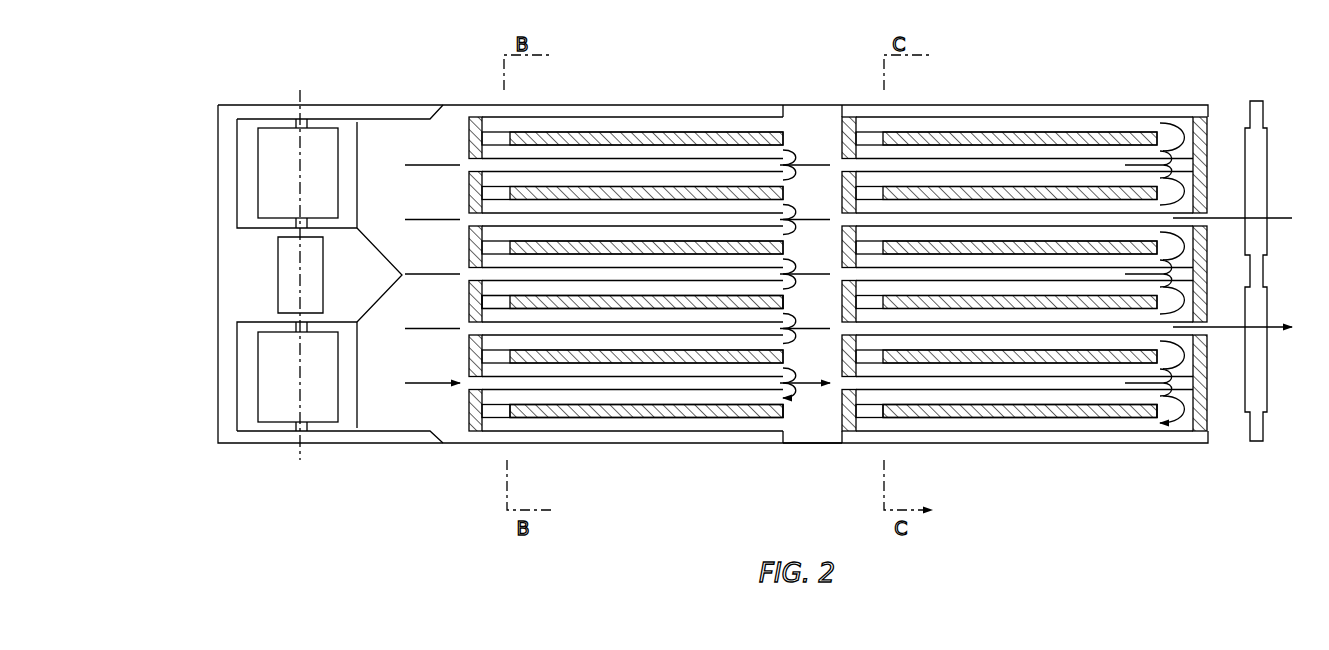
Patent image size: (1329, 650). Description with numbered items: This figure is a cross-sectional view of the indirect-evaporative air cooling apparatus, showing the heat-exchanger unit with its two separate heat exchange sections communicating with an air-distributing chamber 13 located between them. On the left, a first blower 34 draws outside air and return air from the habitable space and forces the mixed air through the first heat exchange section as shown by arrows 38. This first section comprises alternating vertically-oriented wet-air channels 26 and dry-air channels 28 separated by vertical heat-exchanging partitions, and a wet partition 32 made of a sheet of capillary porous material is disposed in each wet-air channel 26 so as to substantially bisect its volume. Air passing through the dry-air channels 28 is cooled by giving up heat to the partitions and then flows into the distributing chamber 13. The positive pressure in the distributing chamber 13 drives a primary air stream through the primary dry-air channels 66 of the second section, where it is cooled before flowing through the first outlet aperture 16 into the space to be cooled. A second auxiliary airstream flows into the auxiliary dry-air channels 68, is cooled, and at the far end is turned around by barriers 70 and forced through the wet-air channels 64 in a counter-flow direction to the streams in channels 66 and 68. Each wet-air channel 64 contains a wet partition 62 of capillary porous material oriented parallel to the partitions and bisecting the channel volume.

The air-distributing chamber 13 is at (812, 426).
The first outlet aperture 16 is at (1290, 366).
The wet-air channels 26 is at (620, 317).
The dry-air channels 28 is at (549, 273).
The wet partition 32 is at (720, 412).
The first blower 34 is at (272, 378).
The arrows 38 is at (437, 383).
The wet partition 62 is at (1075, 412).
The wet-air channels 64 is at (1013, 370).
The primary dry-air channels 66 is at (932, 330).
The auxiliary dry-air channels 68 is at (1043, 273).
The barriers 70 is at (1245, 478).